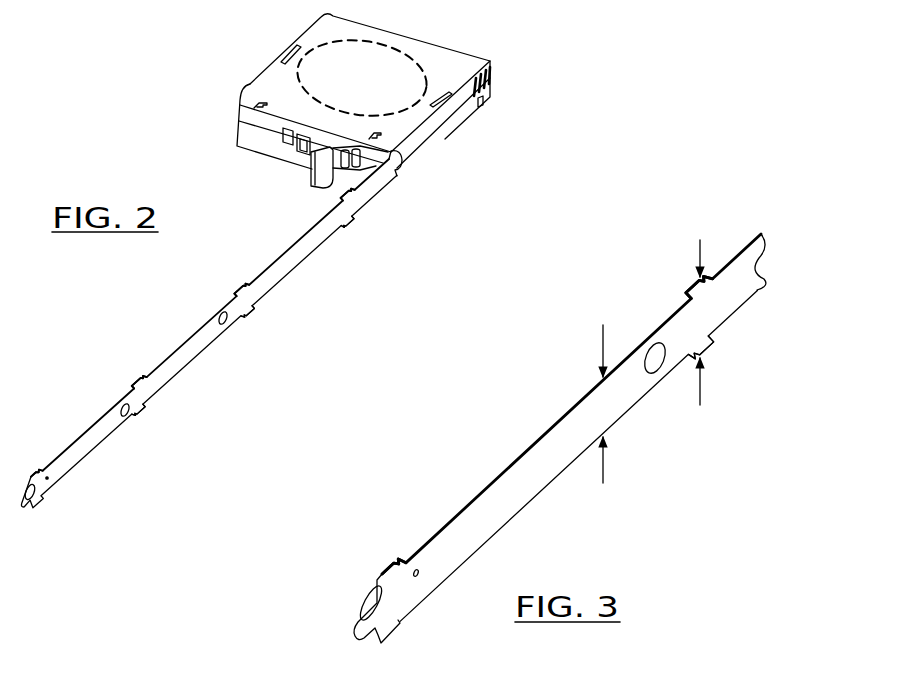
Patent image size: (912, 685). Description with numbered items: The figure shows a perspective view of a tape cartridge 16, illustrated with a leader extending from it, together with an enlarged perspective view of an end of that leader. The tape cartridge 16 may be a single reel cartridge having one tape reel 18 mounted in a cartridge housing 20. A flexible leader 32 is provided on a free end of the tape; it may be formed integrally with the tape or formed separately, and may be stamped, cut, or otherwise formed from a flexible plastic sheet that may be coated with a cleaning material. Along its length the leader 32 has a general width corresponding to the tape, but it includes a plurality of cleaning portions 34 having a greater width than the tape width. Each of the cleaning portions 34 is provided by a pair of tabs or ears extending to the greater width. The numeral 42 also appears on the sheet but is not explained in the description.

In FIG. 2, the tape cartridge 16 is at (512, 39).
In FIG. 2, the tape reel 18 is at (393, 112).
In FIG. 2, the cartridge housing 20 is at (257, 76).
In FIG. 2, the leader strip 32 is at (170, 350).
In FIG. 3, the leader strip 32 is at (478, 491).
In FIG. 2, the tabs 34 is at (238, 285).
In FIG. 3, the tabs 34 is at (688, 295).
In FIG. 3, the component 42 is at (645, 676).